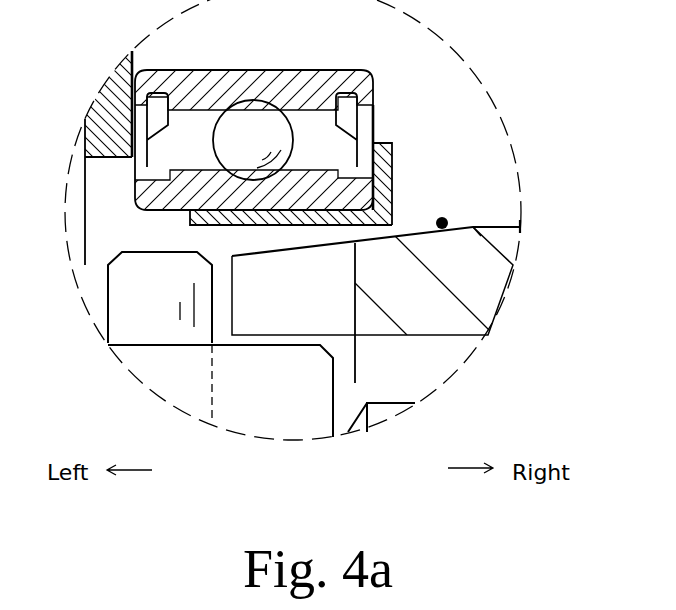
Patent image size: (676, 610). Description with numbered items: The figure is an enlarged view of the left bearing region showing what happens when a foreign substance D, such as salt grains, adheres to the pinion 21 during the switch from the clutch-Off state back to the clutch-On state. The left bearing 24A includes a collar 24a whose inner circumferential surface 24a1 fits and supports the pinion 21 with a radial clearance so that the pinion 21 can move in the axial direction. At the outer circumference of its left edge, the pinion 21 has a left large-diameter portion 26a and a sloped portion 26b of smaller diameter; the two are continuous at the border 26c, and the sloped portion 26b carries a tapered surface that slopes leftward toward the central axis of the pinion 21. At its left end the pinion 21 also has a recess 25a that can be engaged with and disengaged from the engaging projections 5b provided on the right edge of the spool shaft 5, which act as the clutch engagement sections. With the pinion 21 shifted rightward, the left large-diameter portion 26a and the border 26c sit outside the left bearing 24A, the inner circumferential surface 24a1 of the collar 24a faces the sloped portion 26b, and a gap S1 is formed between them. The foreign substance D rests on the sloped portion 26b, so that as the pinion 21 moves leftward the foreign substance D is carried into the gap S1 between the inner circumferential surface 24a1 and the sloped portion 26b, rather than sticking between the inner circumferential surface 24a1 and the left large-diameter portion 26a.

The left bearing 24A is at (331, 70).
The collar 24a is at (377, 143).
The inner circumferential surface 24a1 is at (281, 226).
The pinion 21 is at (476, 272).
The left large-diameter portion 26a is at (500, 226).
The sloped portion 26b is at (355, 243).
The border 26c is at (473, 227).
The foreign substance D is at (443, 217).
The gap S1 is at (403, 224).
The engaging projection 5b is at (138, 302).
The spool shaft 5 is at (285, 405).
The recess 25a is at (342, 327).